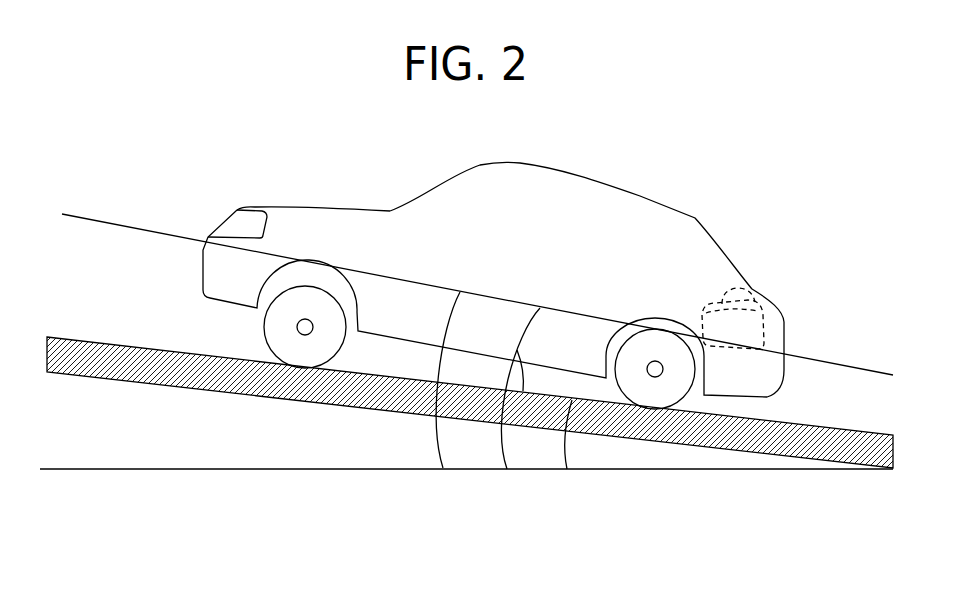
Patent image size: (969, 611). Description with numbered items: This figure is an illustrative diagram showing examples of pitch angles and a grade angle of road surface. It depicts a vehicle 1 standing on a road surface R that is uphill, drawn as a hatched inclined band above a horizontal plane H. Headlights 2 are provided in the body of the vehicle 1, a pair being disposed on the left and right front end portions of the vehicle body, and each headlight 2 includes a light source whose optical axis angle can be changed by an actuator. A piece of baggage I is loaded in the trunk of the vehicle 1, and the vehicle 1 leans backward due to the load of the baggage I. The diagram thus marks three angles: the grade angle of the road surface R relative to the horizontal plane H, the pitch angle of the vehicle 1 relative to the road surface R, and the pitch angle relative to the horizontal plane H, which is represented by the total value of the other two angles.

The vehicle 1 is at (643, 195).
The headlight 2 is at (232, 222).
The road surface R is at (103, 338).
The horizontal plane H is at (160, 470).
The baggage I is at (750, 302).